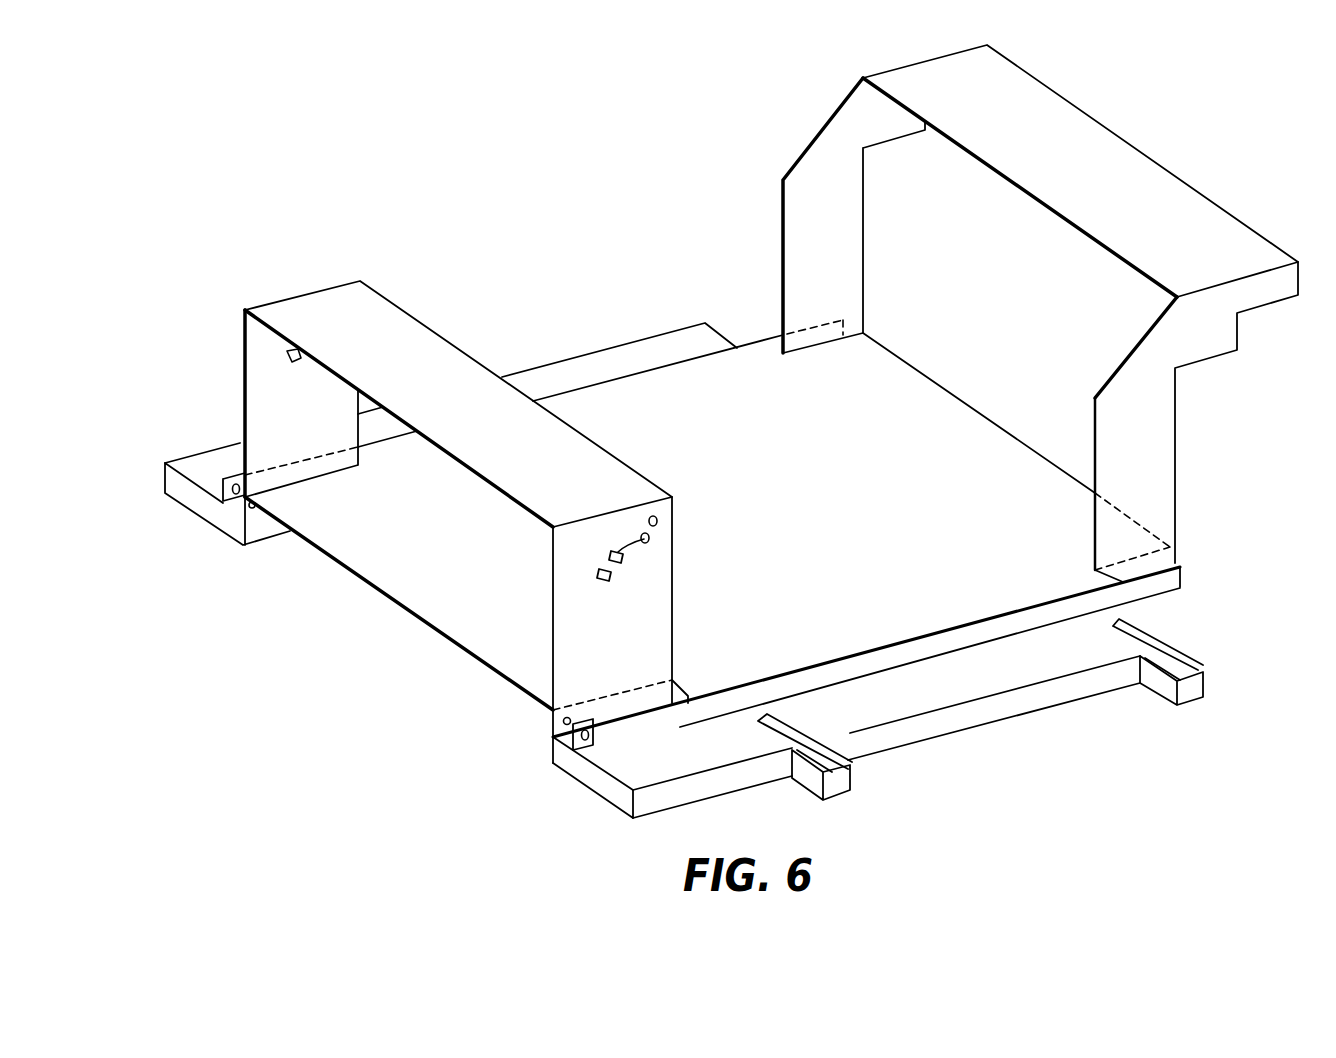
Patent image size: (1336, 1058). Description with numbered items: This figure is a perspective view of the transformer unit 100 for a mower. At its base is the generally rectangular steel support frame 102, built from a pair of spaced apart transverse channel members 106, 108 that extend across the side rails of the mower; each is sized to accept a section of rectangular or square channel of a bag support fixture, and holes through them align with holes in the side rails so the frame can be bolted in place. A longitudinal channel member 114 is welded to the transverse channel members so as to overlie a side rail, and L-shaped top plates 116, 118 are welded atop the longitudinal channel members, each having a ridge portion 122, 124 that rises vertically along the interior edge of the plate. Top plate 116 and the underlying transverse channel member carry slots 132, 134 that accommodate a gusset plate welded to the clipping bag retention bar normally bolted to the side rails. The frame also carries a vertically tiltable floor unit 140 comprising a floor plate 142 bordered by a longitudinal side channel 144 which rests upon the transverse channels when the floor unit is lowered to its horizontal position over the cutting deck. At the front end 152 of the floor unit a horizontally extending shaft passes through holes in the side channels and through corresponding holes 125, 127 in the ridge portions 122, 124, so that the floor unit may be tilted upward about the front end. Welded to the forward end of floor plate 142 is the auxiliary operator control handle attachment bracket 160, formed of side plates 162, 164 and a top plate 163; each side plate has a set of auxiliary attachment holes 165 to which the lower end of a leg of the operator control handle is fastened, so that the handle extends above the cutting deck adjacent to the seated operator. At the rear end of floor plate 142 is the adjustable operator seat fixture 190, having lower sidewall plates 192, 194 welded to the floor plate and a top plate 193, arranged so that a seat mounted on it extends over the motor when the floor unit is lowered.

The transformer unit 100 is at (479, 197).
The support frame 102 is at (1160, 622).
The transverse channel member 106 is at (853, 786).
The transverse channel member 108 is at (1205, 696).
The longitudinal channel member 114 is at (236, 538).
The L-shaped top plate 116 is at (584, 776).
The L-shaped top plate 118 is at (186, 457).
The ridge portion 122 is at (893, 656).
The ridge portion 124 is at (218, 493).
The hole 125 is at (588, 731).
The hole 127 is at (234, 485).
The slot 132 is at (762, 722).
The slot 134 is at (820, 752).
The floor unit 140 is at (926, 362).
The floor plate 142 is at (994, 447).
The longitudinal side channel 144 is at (674, 690).
The front end 152 is at (386, 598).
The auxiliary operator control handle attachment bracket 160 is at (609, 434).
The side plate 162 is at (665, 591).
The top plate 163 is at (443, 370).
The side plate 164 is at (245, 336).
The auxiliary attachment holes 165 is at (605, 570).
The adjustable operator seat fixture 190 is at (1190, 431).
The lower sidewall plate 192 is at (1153, 480).
The top plate 193 is at (1157, 190).
The lower sidewall plate 194 is at (845, 247).